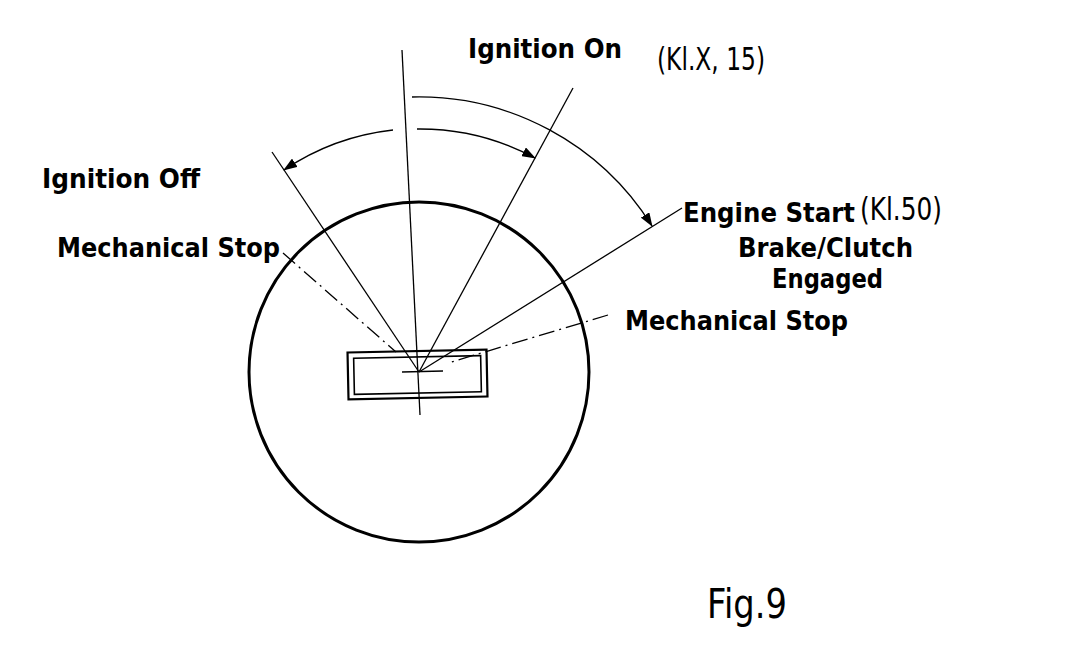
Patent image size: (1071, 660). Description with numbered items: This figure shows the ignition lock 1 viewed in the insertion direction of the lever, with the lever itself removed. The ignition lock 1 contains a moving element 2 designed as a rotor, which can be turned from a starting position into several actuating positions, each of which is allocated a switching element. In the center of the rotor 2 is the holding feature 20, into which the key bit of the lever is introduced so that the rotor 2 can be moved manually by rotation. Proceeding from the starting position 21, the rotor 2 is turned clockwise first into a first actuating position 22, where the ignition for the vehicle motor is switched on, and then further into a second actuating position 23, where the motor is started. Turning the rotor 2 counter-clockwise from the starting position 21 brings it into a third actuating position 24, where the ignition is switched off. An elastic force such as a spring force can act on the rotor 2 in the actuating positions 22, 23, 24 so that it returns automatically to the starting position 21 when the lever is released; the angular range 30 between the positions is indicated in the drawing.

The ignition lock 1 is at (243, 457).
The moving element 2 is at (500, 495).
The holding feature 20 is at (462, 382).
The starting position 21 is at (405, 213).
The first actuating position 22 is at (513, 226).
The second actuating position 23 is at (579, 266).
The third actuating position 24 is at (338, 243).
The rotation angle 30 is at (468, 161).